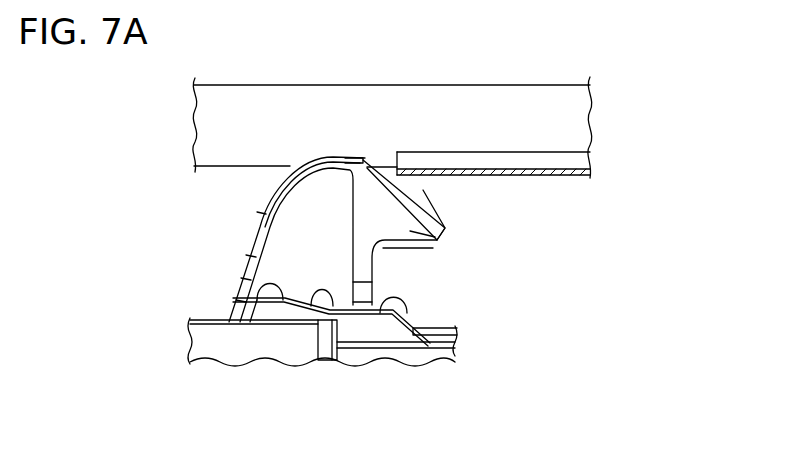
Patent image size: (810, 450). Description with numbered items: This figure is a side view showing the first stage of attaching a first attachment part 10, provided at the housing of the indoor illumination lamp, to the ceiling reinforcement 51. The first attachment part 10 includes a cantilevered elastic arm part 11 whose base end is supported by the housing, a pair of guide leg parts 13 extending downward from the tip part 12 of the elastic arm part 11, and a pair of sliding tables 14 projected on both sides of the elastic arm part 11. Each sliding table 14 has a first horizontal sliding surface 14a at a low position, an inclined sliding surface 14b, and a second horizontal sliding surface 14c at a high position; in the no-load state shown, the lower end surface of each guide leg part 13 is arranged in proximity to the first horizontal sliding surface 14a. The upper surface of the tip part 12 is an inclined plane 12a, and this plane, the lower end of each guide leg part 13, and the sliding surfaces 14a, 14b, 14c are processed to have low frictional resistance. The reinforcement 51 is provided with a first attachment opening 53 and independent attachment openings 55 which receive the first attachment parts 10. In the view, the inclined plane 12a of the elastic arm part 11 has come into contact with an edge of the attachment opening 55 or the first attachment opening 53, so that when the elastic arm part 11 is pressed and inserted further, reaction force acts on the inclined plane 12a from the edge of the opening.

The first attachment part 10 is at (320, 145).
The elastic arm part 11 is at (258, 226).
The tip part 12 is at (438, 238).
The inclined plane 12a is at (423, 190).
The guide leg part 13 is at (380, 298).
The sliding table 14 is at (262, 312).
The first horizontal sliding surface 14a is at (389, 313).
The inclined sliding surface 14b is at (333, 306).
The second horizontal sliding surface 14c is at (283, 300).
The reinforcement 51 is at (381, 100).
The first attachment opening 53 is at (493, 172).
The attachment opening 55 is at (387, 163).